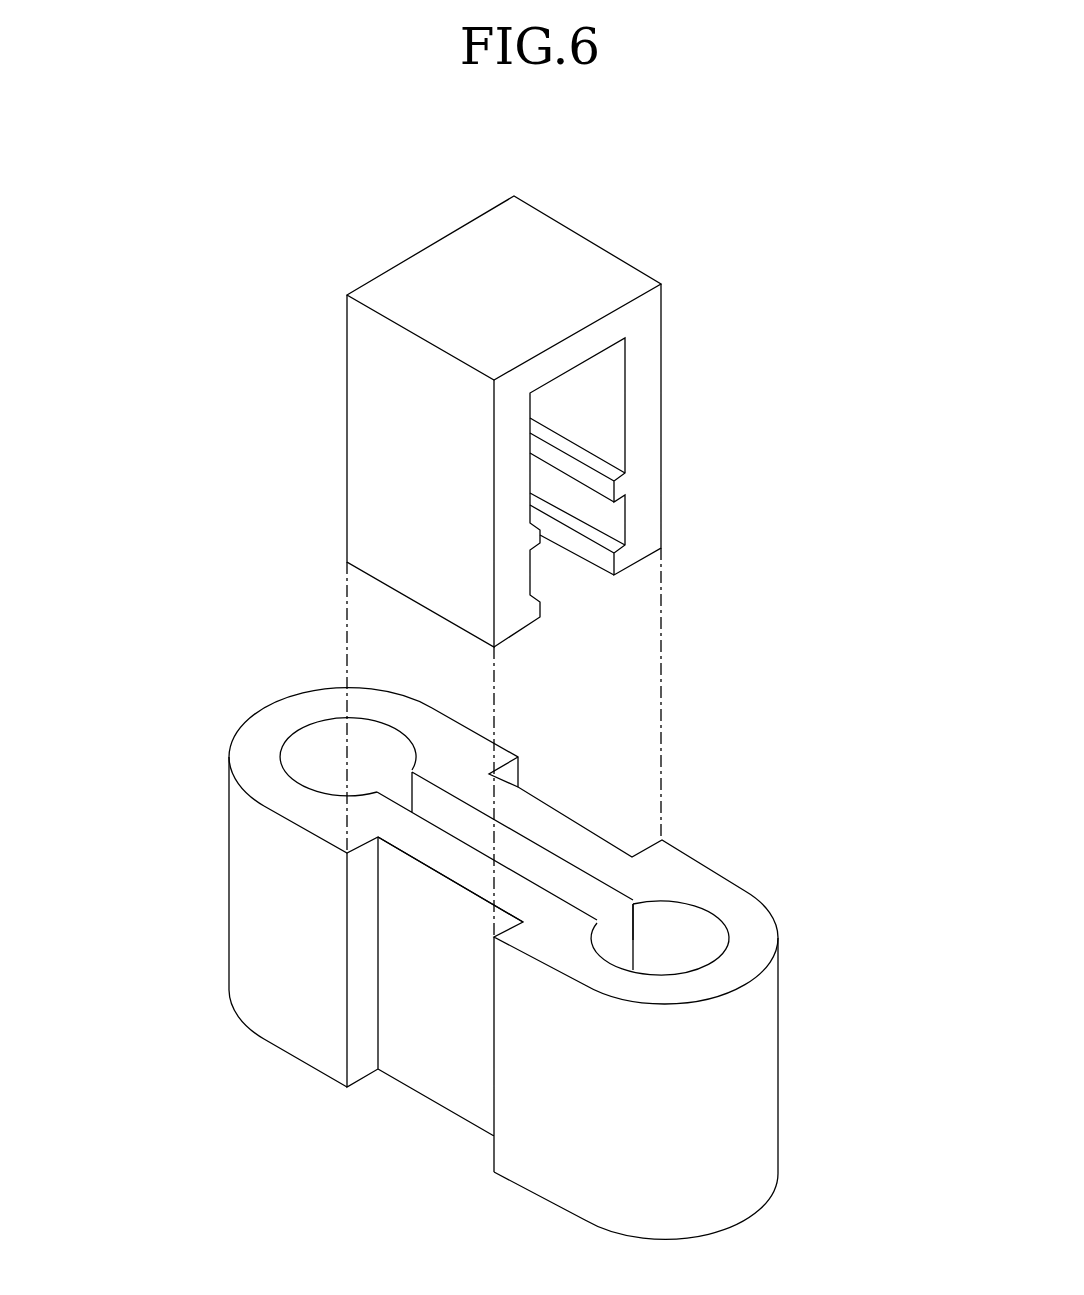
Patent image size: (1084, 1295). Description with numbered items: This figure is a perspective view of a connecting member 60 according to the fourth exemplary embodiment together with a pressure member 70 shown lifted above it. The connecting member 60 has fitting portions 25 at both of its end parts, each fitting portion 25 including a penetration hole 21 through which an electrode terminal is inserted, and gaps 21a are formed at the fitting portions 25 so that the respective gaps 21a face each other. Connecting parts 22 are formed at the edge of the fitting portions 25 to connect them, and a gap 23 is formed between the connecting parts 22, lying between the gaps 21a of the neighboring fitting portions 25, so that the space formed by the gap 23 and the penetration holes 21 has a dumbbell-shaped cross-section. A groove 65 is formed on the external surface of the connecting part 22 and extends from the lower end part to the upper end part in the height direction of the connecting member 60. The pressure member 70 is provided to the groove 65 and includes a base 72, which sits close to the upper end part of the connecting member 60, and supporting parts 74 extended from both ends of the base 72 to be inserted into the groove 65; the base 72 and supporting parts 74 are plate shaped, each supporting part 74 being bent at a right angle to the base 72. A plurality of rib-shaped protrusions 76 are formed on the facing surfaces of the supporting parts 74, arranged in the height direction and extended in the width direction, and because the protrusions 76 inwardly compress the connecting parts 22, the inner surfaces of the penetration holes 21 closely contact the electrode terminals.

The pressure member 70 is at (652, 236).
The base 72 is at (530, 248).
The supporting parts 74 is at (378, 415).
The protrusions 76 is at (597, 480).
The connecting member 60 is at (780, 652).
The fitting portions 25 is at (333, 692).
The connecting parts 22 is at (580, 850).
The gap 23 is at (440, 800).
The groove 65 is at (547, 801).
The penetration hole 21 is at (675, 928).
The gaps 21a is at (614, 922).